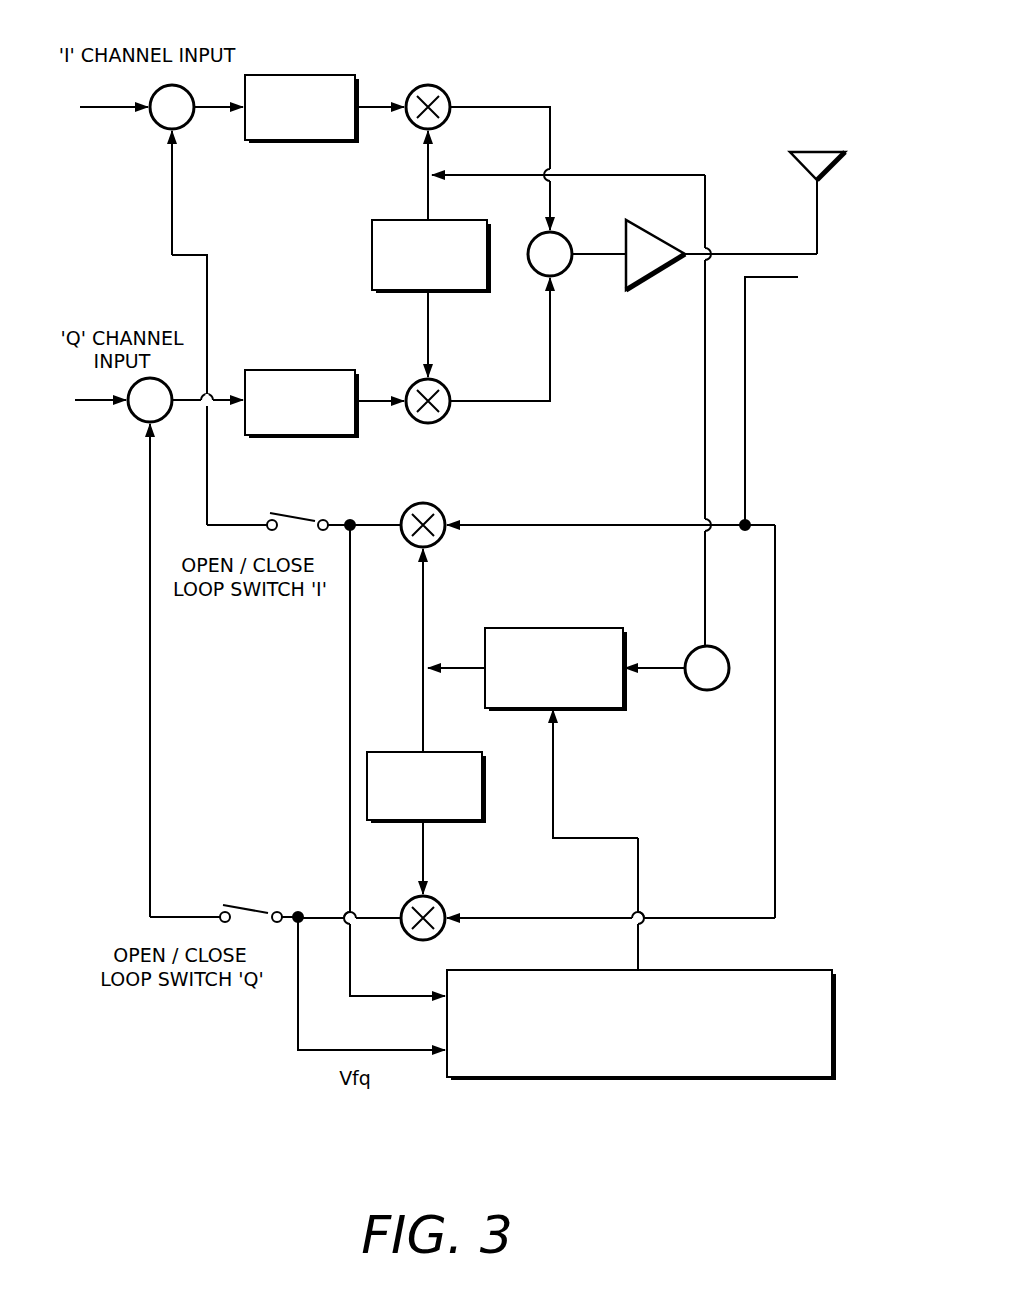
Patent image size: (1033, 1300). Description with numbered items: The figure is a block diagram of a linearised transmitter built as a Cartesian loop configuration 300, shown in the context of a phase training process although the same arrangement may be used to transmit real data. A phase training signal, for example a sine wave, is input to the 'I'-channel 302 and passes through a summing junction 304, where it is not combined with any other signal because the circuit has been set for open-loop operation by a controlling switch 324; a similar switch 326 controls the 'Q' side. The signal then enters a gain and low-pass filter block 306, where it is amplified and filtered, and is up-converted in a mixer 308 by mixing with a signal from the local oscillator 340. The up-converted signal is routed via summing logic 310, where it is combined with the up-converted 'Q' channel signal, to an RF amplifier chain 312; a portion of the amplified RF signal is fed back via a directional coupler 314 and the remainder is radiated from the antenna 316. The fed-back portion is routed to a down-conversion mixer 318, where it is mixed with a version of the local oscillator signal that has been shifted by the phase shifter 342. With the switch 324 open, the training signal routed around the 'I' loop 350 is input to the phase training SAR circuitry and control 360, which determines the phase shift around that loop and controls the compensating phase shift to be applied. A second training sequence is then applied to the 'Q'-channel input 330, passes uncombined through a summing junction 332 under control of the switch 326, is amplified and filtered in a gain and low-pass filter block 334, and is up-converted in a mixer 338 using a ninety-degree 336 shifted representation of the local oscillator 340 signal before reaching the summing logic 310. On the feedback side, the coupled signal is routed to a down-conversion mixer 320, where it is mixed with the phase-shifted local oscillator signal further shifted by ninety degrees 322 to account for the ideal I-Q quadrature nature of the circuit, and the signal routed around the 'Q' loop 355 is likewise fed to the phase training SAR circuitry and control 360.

The Cartesian loop configuration 300 is at (725, 46).
The 'I'-channel 302 is at (124, 105).
The summing junction 304 is at (160, 124).
The gain and low-pass filter block 306 is at (340, 75).
The mixer 308 is at (428, 83).
The summing logic 310 is at (566, 238).
The RF amplifier chain 312 is at (655, 278).
The directional coupler 314 is at (780, 277).
The antenna 316 is at (817, 214).
The down-conversion mixer 318 is at (423, 501).
The down-conversion mixer 320 is at (423, 894).
The ninety-degree phase shift 322 is at (462, 752).
The switch 324 is at (297, 515).
The switch 326 is at (252, 908).
The 'Q'-channel input 330 is at (104, 398).
The summing junction 332 is at (140, 416).
The gain and low-pass filter block 334 is at (340, 370).
The 90-degree phase shift 336 is at (466, 220).
The mixer 338 is at (444, 382).
The local oscillator 340 is at (710, 690).
The phase shifter 342 is at (603, 628).
The 'I' loop 350 is at (350, 688).
The 'Q' loop 355 is at (298, 1031).
The phase training SAR circuitry and control 360 is at (815, 970).